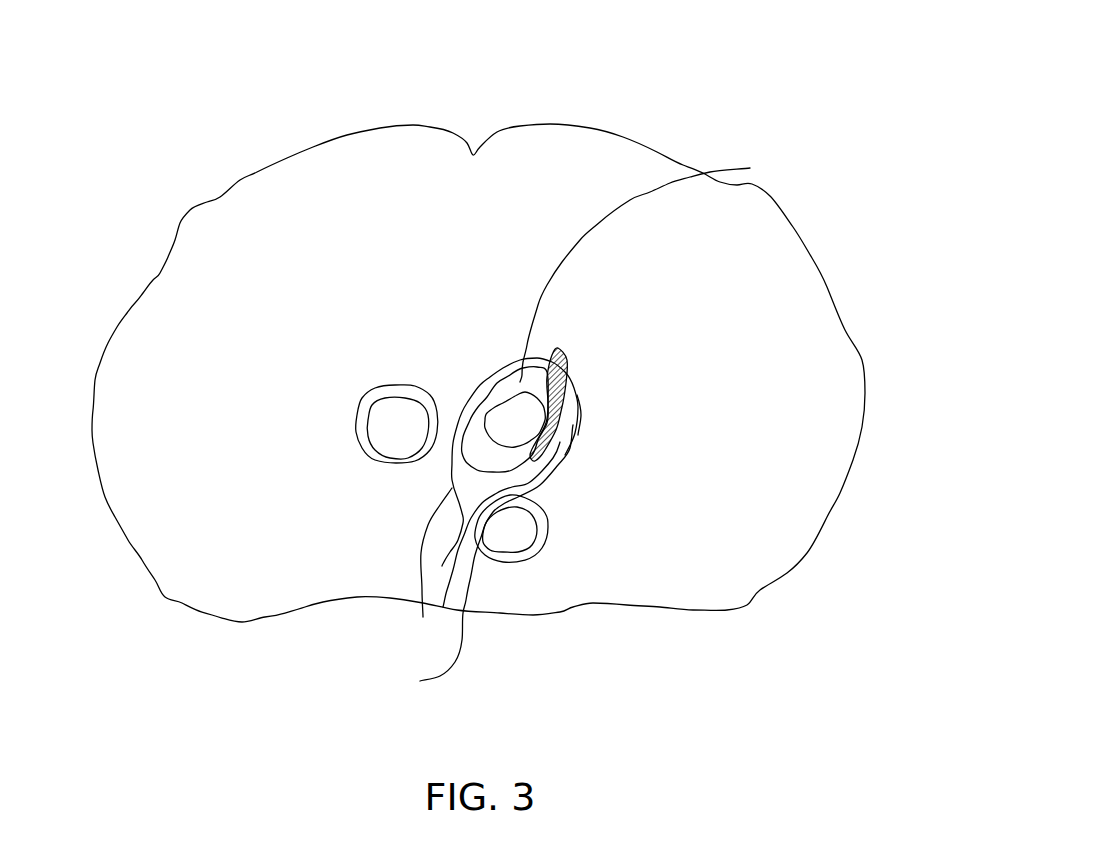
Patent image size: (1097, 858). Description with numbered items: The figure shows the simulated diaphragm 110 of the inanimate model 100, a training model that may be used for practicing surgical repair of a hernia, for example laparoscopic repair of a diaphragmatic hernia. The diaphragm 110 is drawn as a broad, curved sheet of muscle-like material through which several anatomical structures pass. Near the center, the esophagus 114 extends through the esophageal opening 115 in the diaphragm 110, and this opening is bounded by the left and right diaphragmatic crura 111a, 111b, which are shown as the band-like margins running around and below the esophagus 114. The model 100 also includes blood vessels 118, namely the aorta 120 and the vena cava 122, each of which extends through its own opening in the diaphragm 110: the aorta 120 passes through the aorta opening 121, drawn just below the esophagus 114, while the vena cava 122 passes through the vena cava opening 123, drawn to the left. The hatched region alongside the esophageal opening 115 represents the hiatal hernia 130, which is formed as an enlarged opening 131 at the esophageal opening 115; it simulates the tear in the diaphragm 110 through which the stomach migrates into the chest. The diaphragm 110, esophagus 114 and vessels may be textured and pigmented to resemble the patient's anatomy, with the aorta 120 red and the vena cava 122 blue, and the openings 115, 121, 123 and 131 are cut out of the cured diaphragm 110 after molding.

The inanimate model 100 is at (686, 70).
The diaphragm 110 is at (747, 260).
The esophagus 114 is at (540, 428).
The esophageal opening 115 is at (655, 268).
The blood vessels 118 is at (408, 433).
The aorta 120 is at (505, 535).
The aorta opening 121 is at (495, 535).
The vena cava 122 is at (392, 442).
The vena cava opening 123 is at (365, 455).
The hiatal hernia 130 is at (557, 417).
The enlarged opening 131 is at (567, 390).
The left diaphragmatic crus 111a is at (425, 563).
The right diaphragmatic crus 111b is at (553, 467).